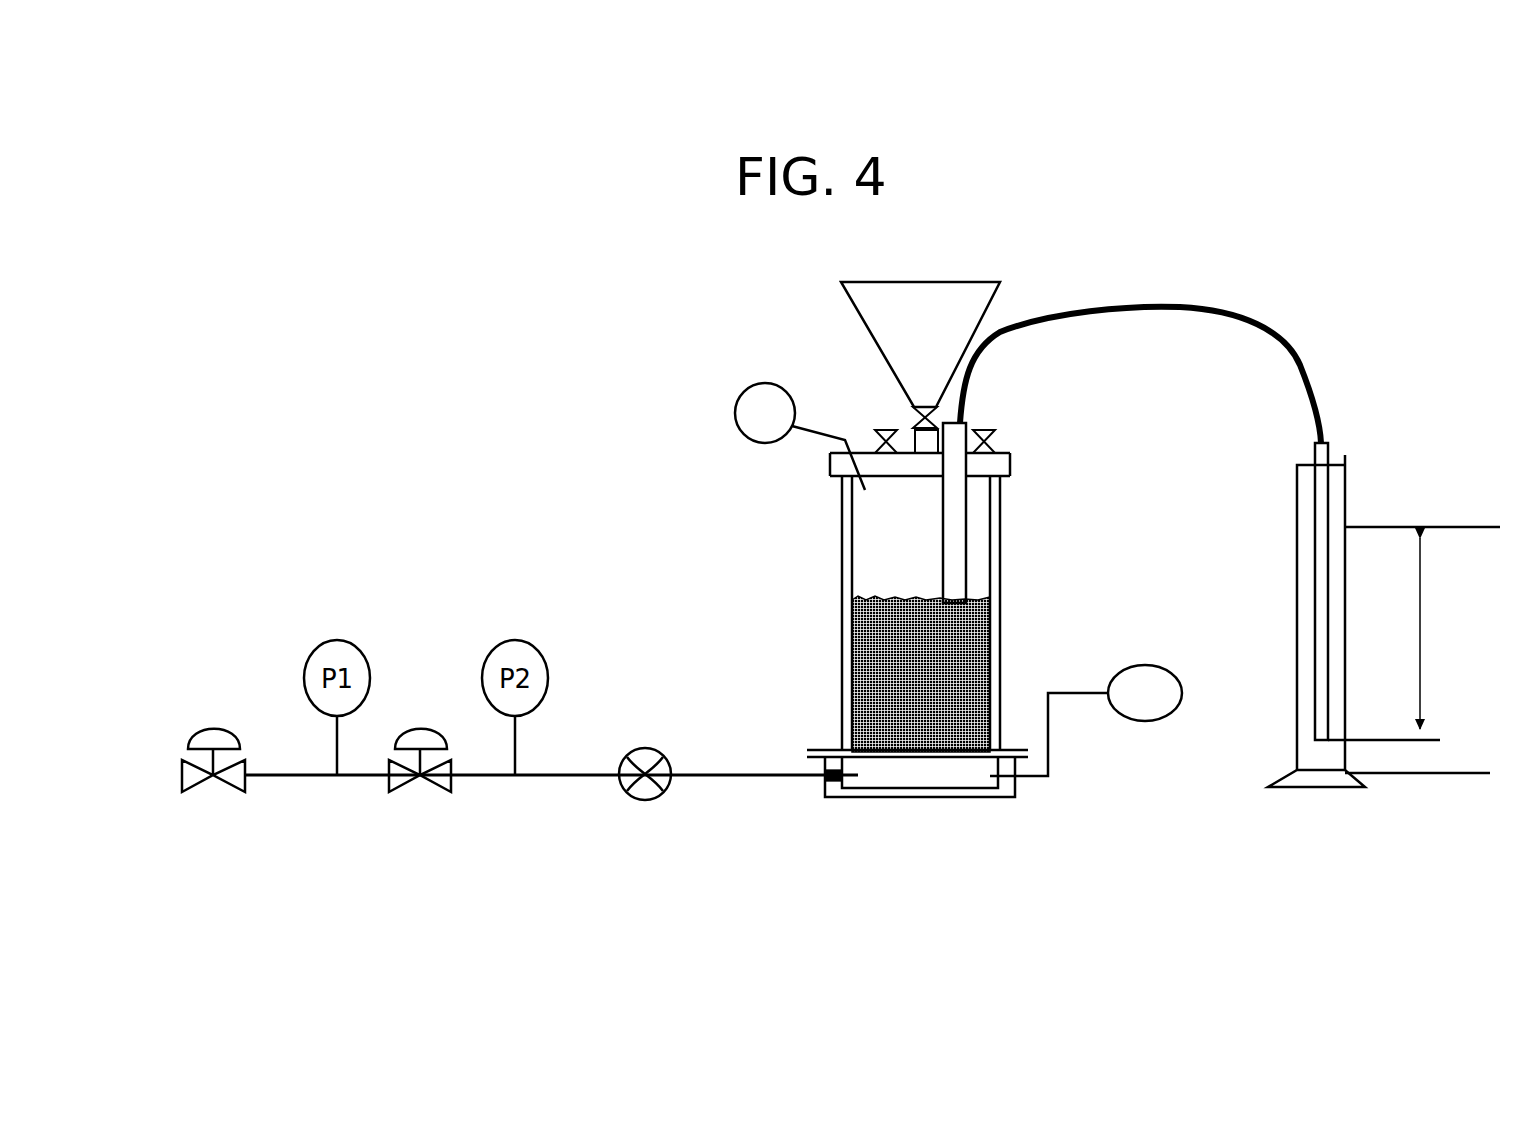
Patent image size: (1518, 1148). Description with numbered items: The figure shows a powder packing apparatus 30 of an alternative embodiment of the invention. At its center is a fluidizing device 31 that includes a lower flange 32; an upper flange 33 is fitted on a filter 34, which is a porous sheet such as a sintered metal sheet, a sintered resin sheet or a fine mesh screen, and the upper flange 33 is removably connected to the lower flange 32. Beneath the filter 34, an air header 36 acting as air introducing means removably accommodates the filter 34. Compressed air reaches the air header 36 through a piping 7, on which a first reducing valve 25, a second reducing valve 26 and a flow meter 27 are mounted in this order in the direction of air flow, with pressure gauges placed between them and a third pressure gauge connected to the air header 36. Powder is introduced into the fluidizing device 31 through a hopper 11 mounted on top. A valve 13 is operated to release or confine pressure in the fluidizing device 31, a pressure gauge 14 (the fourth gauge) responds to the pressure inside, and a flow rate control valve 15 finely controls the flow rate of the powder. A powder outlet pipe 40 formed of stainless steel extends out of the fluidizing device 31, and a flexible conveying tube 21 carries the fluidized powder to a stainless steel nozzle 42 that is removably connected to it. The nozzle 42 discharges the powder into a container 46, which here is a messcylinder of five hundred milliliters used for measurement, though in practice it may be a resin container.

The piping 7 is at (303, 781).
The hopper 11 is at (950, 292).
The valve 13 is at (851, 405).
The pressure gauge 14 is at (748, 440).
The flow rate control valve 15 is at (1003, 421).
The hose 21 is at (1224, 308).
The first reducing valve 25 is at (211, 802).
The second reducing valve 26 is at (412, 816).
The flow meter 27 is at (645, 803).
The powder packing apparatus 30 is at (660, 434).
The fluidizing device 31 is at (842, 560).
The lower flange 32 is at (1007, 750).
The upper flange 33 is at (1023, 778).
The filter 34 is at (891, 760).
The air header 36 is at (852, 793).
The powder outlet pipe 40 is at (966, 524).
The nozzle 42 is at (1285, 448).
The container 46 is at (1295, 742).